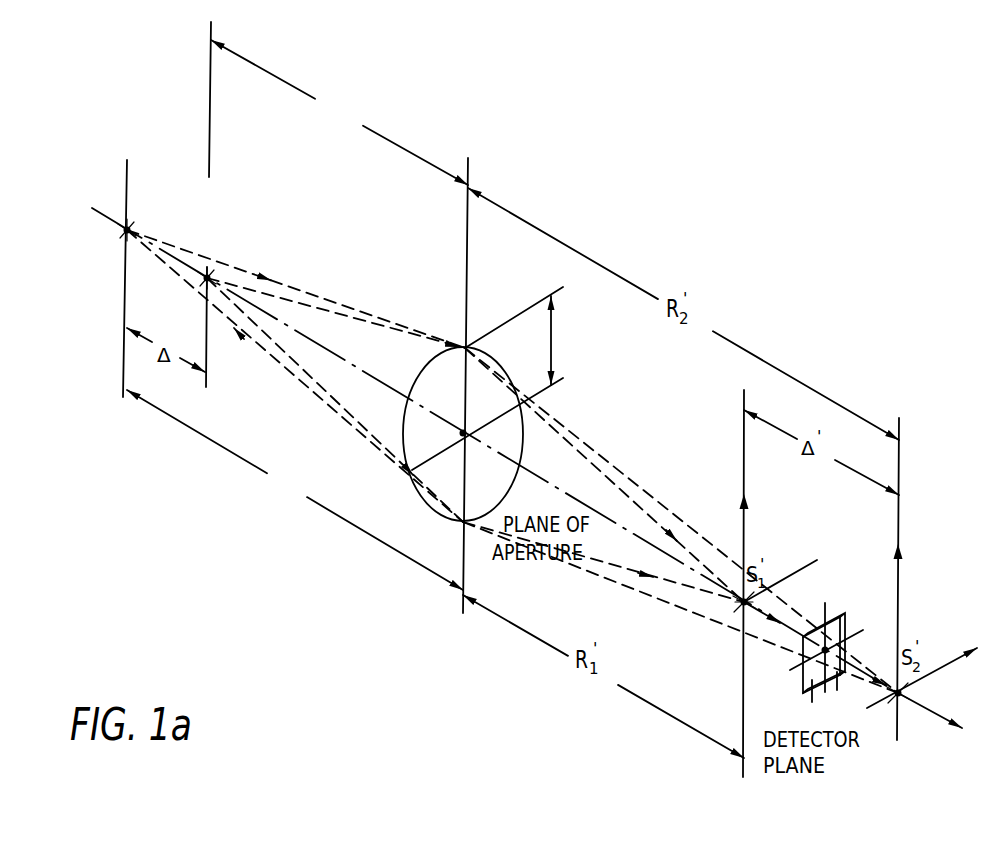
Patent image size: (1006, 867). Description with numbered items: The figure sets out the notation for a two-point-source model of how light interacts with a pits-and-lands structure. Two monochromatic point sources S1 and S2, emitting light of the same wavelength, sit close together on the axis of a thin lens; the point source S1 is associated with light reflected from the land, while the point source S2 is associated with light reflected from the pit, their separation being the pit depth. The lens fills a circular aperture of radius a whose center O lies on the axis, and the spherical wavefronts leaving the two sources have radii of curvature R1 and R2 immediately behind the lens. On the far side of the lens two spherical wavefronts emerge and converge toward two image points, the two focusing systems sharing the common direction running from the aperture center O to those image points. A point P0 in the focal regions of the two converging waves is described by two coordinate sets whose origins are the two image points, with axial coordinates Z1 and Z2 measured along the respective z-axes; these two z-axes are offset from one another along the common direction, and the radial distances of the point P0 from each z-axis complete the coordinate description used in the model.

The point source S1 is at (173, 278).
The point source S2 is at (240, 314).
The center of circular aperture O is at (483, 434).
The aperture radius a is at (516, 336).
The radius of curvature R1 is at (295, 490).
The radius of curvature R2 is at (339, 112).
The z-coordinate Z1 is at (765, 632).
The z-coordinate Z2 is at (927, 700).
The point in focal region P0 is at (825, 650).